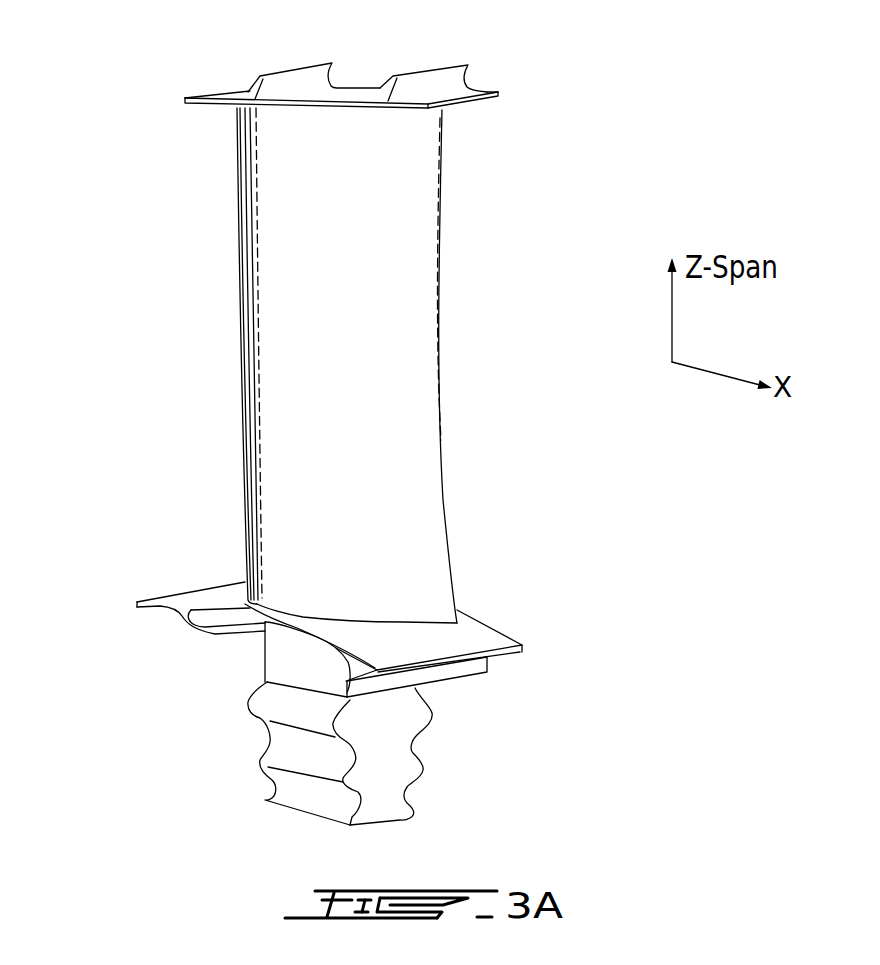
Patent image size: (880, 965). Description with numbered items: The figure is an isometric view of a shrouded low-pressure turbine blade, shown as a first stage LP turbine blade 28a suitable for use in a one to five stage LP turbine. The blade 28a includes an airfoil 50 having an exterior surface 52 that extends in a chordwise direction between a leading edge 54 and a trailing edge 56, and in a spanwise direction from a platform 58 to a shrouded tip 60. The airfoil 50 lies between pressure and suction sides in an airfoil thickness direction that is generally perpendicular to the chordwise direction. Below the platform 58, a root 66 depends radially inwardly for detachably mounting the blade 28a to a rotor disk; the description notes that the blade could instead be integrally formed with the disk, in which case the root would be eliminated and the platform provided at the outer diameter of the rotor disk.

The first stage LP turbine blade 28a is at (523, 127).
The airfoil 50 is at (187, 477).
The exterior surface 52 is at (257, 312).
The leading edge 54 is at (240, 418).
The trailing edge 56 is at (445, 458).
The platform 58 is at (177, 595).
The shrouded tip 60 is at (215, 90).
The root 66 is at (295, 753).